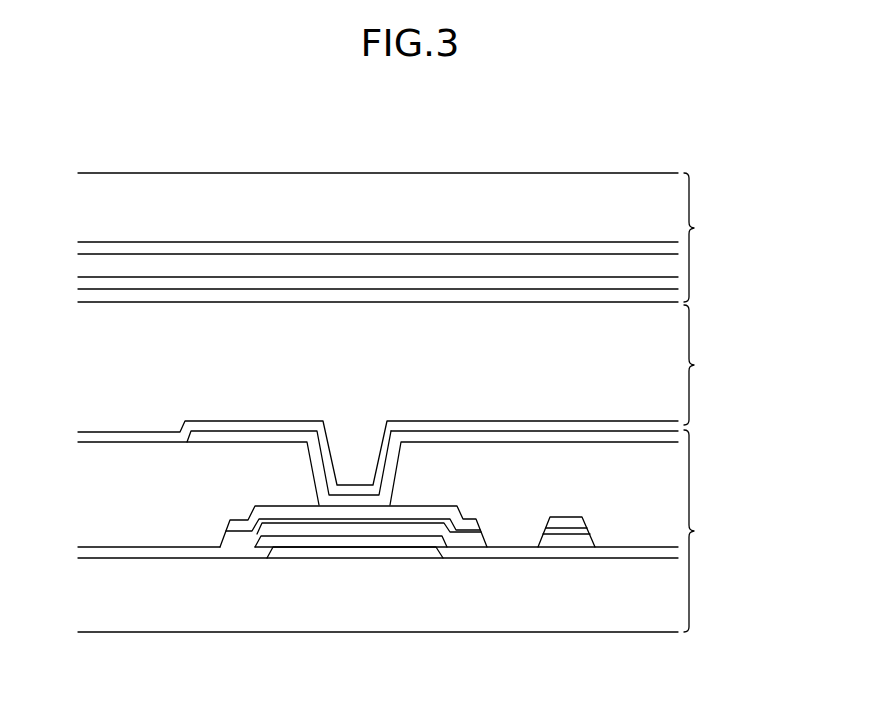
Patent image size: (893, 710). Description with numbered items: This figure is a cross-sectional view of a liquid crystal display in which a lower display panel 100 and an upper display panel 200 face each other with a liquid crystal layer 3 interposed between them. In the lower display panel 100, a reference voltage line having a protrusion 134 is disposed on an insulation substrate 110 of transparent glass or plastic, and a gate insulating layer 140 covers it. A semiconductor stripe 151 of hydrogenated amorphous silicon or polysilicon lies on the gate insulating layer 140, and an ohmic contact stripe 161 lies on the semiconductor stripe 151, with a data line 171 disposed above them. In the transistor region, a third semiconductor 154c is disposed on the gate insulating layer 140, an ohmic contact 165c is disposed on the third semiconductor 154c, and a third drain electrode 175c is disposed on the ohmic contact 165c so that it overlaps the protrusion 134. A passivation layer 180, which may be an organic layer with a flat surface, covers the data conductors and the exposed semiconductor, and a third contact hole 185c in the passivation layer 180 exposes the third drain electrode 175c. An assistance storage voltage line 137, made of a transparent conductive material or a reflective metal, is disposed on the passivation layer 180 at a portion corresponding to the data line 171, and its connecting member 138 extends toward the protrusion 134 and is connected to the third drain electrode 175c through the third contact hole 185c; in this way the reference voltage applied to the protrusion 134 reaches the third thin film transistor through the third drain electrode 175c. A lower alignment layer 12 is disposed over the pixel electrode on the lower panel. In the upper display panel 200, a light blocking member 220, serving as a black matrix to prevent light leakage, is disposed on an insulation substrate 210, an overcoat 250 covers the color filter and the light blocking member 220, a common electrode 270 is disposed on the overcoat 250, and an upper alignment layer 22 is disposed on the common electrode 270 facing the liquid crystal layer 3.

The upper display panel 200 is at (707, 237).
The insulation substrate 210 is at (535, 191).
The light blocking member 220 is at (457, 248).
The overcoat 250 is at (345, 265).
The common electrode 270 is at (240, 283).
The upper alignment layer 22 is at (452, 293).
The liquid crystal layer 3 is at (699, 365).
The lower display panel 100 is at (707, 531).
The lower alignment layer 12 is at (511, 423).
The assistance storage voltage line 137 is at (593, 437).
The connecting member 138 is at (222, 437).
The third contact hole 185c is at (315, 476).
The passivation layer 180 is at (137, 517).
The insulation substrate 110 is at (198, 607).
The protrusion 134 is at (413, 551).
The gate insulating layer 140 is at (476, 552).
The third semiconductor 154c is at (363, 530).
The ohmic contact 165c is at (323, 522).
The third drain electrode 175c is at (295, 512).
The semiconductor stripe 151 is at (550, 542).
The ohmic contact stripe 161 is at (565, 533).
The data line 171 is at (577, 523).